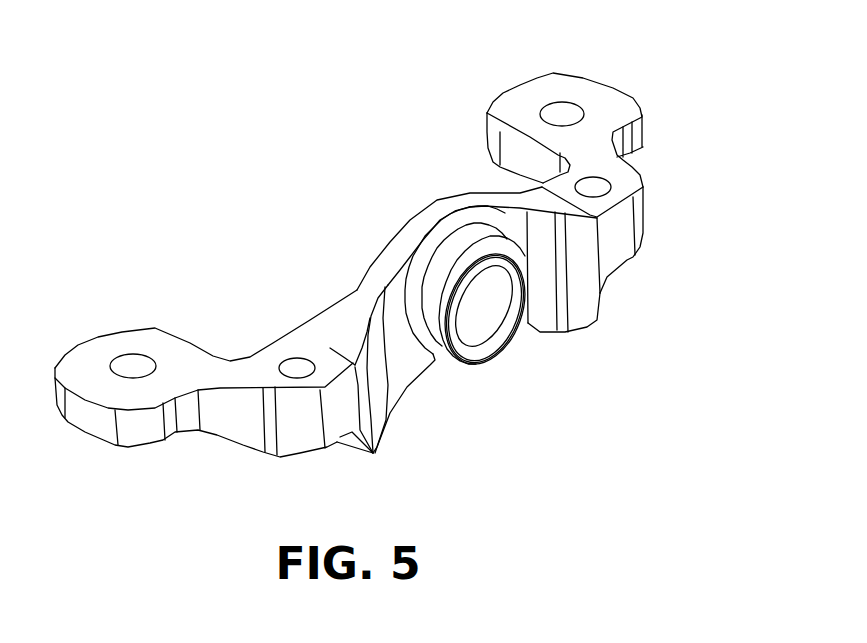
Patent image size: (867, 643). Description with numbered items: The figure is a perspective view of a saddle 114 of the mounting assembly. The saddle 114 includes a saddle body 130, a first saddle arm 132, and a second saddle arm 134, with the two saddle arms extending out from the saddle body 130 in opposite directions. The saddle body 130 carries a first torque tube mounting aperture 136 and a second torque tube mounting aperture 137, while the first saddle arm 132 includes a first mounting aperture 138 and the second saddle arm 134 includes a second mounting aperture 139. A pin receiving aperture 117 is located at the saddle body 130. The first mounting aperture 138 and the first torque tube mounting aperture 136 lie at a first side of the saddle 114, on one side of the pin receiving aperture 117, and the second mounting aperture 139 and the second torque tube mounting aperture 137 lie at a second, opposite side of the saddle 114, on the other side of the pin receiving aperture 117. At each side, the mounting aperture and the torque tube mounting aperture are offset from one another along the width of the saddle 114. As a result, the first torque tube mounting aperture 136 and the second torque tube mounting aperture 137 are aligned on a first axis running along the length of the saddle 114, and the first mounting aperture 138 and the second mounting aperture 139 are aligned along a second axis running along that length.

The saddle 114 is at (345, 243).
The saddle body 130 is at (490, 297).
The first saddle arm 132 is at (572, 162).
The second saddle arm 134 is at (186, 373).
The first torque tube mounting aperture 136 is at (620, 205).
The second torque tube mounting aperture 137 is at (281, 338).
The first mounting aperture 138 is at (568, 86).
The second mounting aperture 139 is at (133, 335).
The pin receiving aperture 117 is at (503, 362).